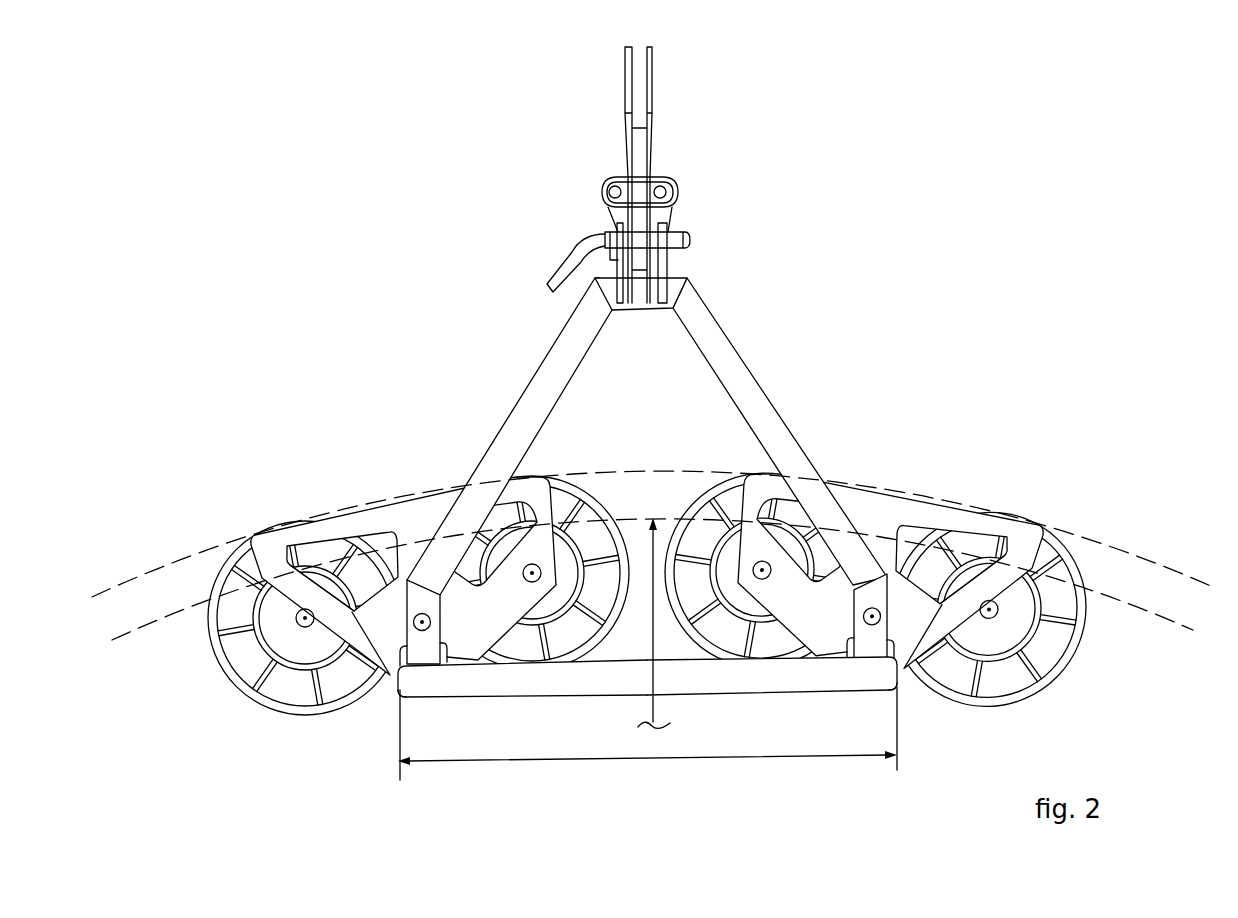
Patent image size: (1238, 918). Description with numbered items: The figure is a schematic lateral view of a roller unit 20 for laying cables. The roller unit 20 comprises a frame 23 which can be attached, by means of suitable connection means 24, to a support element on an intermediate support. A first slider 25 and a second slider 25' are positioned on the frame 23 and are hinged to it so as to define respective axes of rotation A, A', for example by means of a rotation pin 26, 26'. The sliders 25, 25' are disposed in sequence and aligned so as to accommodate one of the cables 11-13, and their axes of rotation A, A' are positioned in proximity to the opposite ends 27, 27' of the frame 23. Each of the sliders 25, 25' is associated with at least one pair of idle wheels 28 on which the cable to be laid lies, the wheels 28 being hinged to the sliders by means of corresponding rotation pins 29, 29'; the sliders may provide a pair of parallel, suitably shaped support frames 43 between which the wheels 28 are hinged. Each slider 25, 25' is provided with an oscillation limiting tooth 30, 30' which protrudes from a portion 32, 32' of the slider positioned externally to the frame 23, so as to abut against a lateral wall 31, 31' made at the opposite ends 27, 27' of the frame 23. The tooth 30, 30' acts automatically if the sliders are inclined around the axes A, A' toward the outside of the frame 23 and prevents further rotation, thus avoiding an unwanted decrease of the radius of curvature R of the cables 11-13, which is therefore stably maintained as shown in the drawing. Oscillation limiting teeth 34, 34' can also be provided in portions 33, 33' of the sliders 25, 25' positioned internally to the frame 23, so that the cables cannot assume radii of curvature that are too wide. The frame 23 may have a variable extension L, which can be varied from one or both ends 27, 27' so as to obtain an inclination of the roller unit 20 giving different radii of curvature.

The cables 11-13 is at (137, 576).
The roller unit 20 is at (802, 280).
The frame 23 is at (505, 398).
The connection means 24 is at (704, 211).
The first slider 25 is at (380, 486).
The second slider 25' is at (914, 483).
The rotation pin 26 is at (420, 665).
The rotation pin 26' is at (869, 658).
The end of the frame 27 is at (647, 736).
The end of the frame 27' is at (772, 731).
The wheels 28 is at (209, 569).
The rotation pins 29 is at (512, 569).
The rotation pin 29' is at (1047, 650).
The oscillation limiting tooth 30 is at (350, 565).
The oscillation limiting tooth 30' is at (943, 558).
The lateral wall 31 is at (385, 719).
The lateral wall 31' is at (915, 714).
The portion of the slider 32 is at (258, 619).
The portion of the slider 32' is at (1038, 608).
The portion of the slider 33 is at (499, 610).
The portion of the slider 33' is at (792, 606).
The oscillation limiting tooth 34 is at (443, 694).
The oscillation limiting tooth 34' is at (832, 689).
The support frame 43 is at (307, 530).
The axis of rotation A is at (416, 538).
The axis of rotation A' is at (877, 531).
The radius of curvature R is at (654, 651).
The extension of the frame L is at (518, 761).